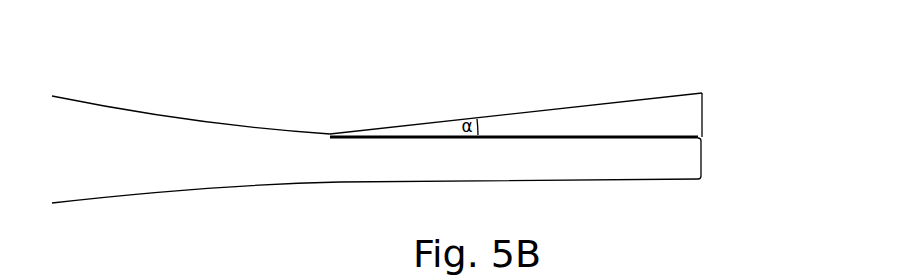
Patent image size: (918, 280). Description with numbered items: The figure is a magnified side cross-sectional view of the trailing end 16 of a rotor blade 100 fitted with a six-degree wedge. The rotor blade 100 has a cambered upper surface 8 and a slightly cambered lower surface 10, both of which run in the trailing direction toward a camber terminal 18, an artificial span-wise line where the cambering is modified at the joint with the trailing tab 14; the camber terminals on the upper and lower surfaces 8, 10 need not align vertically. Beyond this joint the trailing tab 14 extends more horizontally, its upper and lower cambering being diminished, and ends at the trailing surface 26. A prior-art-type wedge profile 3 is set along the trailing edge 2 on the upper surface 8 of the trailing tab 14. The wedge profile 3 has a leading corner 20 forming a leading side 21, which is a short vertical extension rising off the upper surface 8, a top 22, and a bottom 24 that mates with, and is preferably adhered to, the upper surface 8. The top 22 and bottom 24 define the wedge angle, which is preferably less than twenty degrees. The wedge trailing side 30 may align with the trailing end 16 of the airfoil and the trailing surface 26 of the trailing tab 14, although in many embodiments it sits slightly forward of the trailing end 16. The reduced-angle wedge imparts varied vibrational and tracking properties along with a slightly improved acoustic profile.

The rotor blade 100 is at (92, 103).
The upper surface 8 is at (208, 122).
The lower surface 10 is at (160, 194).
The camber terminal 18 is at (290, 129).
The leading side 21 is at (330, 134).
The leading corner 20 is at (330, 133).
The top 22 is at (487, 117).
The bottom 24 is at (422, 137).
The wedge profile 3 is at (628, 112).
The trailing tab 14 is at (613, 173).
The wedge trailing side 30 is at (703, 111).
The trailing edge 2 is at (703, 127).
The trailing end 16 is at (703, 167).
The trailing surface 26 is at (703, 176).